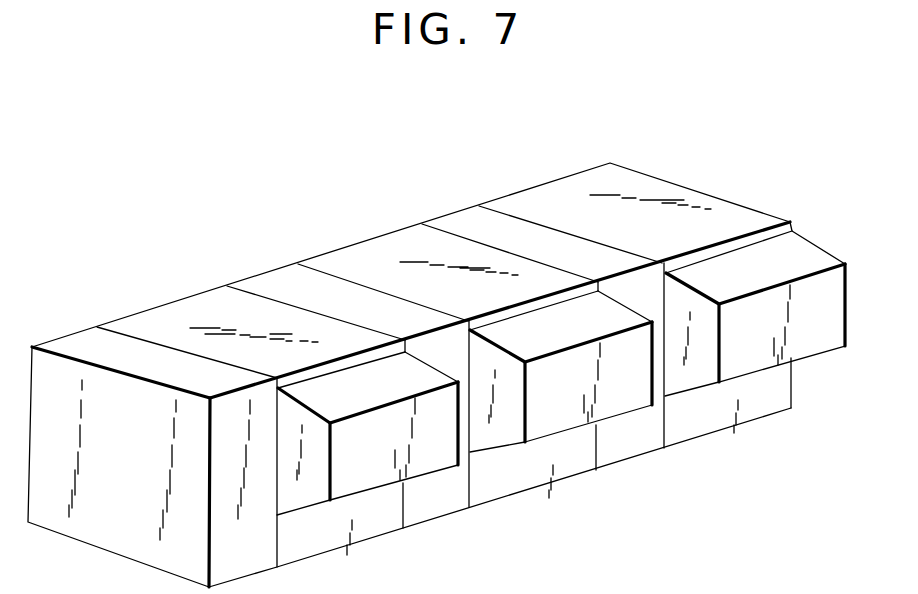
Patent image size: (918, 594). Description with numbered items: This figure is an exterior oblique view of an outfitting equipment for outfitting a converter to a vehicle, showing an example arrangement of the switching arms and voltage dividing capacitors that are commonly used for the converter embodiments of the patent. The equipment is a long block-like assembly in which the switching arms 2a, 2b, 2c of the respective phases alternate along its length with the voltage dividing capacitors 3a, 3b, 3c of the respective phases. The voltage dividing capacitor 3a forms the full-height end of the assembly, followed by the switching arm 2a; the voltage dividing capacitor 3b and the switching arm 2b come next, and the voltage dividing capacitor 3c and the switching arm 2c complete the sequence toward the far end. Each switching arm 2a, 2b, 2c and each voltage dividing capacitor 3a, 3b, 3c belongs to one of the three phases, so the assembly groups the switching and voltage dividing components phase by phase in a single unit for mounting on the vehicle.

The voltage dividing capacitor 3a is at (88, 347).
The switching arm 2a is at (187, 313).
The voltage dividing capacitor 3b is at (275, 280).
The switching arm 2b is at (372, 248).
The voltage dividing capacitor 3c is at (472, 218).
The switching arm 2c is at (565, 192).